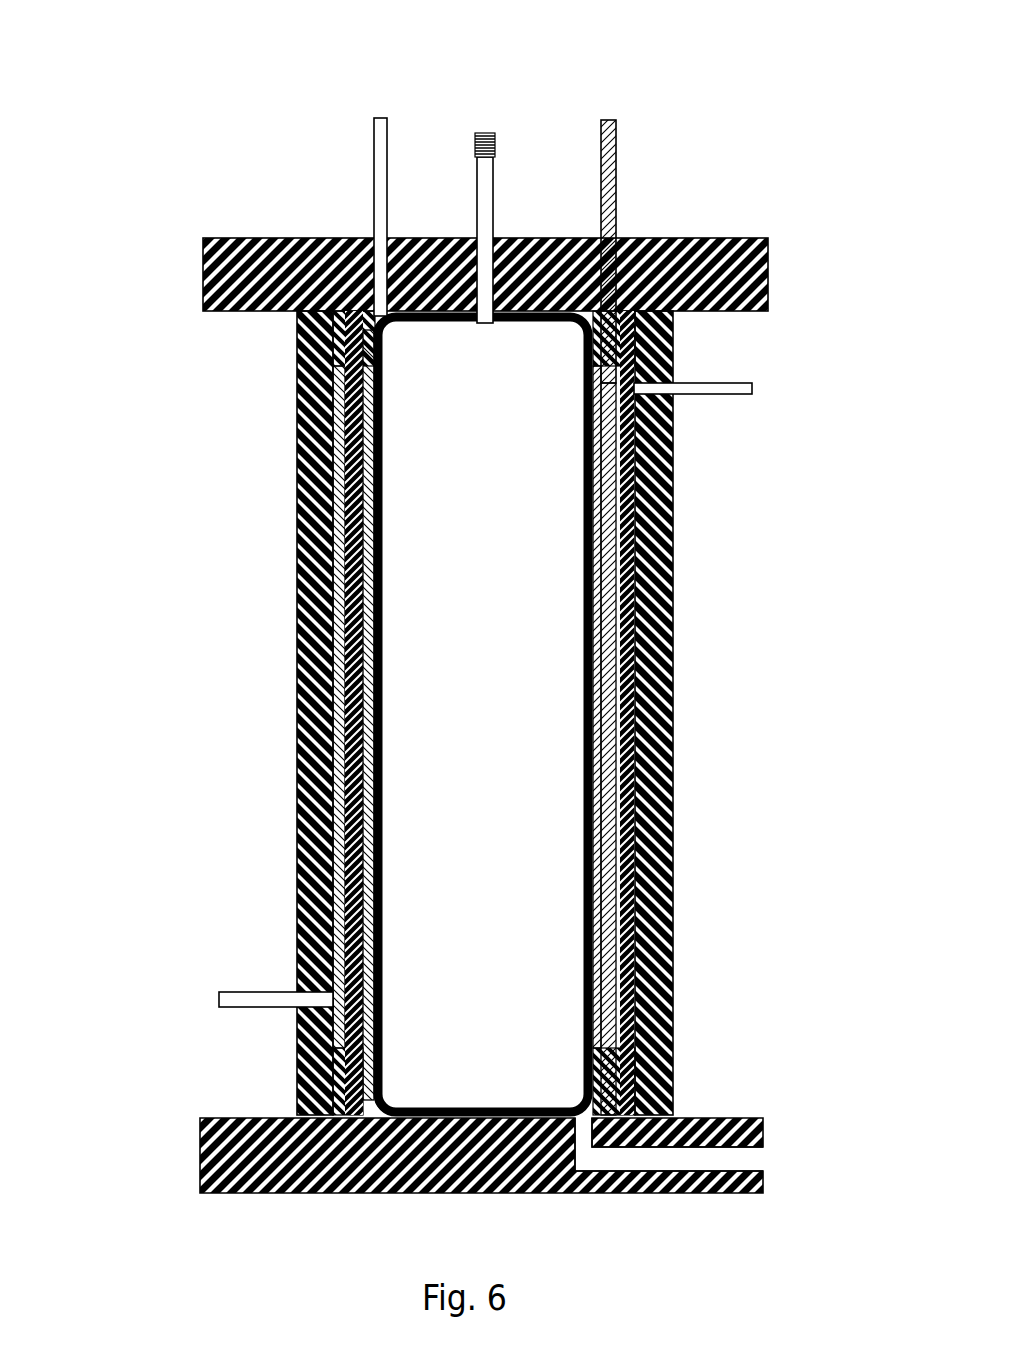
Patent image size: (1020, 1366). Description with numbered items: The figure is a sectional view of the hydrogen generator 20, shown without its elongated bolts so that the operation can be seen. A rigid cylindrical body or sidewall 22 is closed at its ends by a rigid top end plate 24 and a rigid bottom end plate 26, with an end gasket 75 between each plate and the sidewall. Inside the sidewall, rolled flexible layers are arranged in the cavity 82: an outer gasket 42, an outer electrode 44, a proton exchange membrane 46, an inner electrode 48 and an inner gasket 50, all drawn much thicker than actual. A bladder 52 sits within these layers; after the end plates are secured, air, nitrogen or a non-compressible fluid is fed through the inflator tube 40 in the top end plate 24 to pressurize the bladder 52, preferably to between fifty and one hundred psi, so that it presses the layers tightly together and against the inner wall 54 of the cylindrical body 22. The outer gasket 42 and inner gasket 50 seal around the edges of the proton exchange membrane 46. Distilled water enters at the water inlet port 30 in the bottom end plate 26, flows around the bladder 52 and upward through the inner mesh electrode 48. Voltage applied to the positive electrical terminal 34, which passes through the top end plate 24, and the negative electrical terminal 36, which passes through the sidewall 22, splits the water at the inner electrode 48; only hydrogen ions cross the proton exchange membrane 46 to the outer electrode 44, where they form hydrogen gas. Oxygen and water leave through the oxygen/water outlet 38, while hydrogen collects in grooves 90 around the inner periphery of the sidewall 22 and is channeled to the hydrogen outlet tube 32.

The hydrogen generator 20 is at (132, 284).
The cylindrical body or sidewall 22 is at (300, 680).
The top end plate 24 is at (768, 262).
The bottom end plate 26 is at (198, 1158).
The water inlet port 30 is at (755, 1158).
The hydrogen outlet tube 32 is at (723, 396).
The positive electrical terminal 34 is at (611, 118).
The negative electrical terminal 36 is at (240, 988).
The oxygen/water outlet 38 is at (378, 118).
The inflator tube 40 is at (486, 132).
The outer gasket 42 is at (352, 342).
The outer electrode 44 is at (345, 460).
The proton exchange membrane 46 is at (350, 550).
The inner electrode 48 is at (368, 484).
The inner gasket 50 is at (376, 366).
The bladder 52 is at (380, 655).
The inner wall 54 is at (632, 816).
The end gasket 75 is at (675, 318).
The cavity 82 is at (386, 1112).
The grooves 90 is at (335, 402).